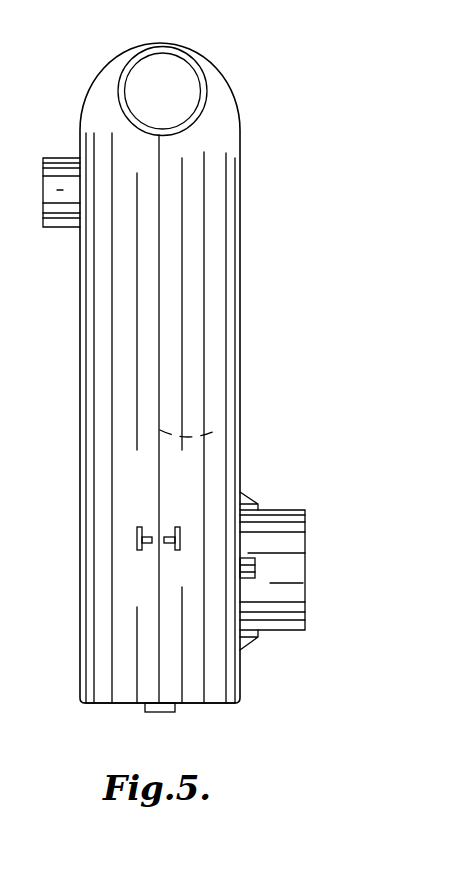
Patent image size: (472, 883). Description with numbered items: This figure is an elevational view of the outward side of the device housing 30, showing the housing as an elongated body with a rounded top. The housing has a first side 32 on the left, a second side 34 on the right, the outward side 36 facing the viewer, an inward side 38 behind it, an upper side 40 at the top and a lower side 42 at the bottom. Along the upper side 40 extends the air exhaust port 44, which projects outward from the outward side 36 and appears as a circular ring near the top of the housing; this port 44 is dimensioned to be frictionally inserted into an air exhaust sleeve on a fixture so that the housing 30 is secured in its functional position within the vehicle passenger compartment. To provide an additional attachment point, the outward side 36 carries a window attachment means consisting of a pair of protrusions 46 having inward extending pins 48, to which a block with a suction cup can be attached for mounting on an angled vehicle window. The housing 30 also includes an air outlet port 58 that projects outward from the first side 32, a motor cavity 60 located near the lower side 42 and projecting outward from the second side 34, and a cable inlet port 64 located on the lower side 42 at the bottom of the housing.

The device housing 30 is at (240, 288).
The first side 32 is at (80, 470).
The second side 34 is at (238, 361).
The outward side 36 is at (190, 215).
The inward side 38 is at (224, 429).
The upper side 40 is at (165, 47).
The lower side 42 is at (203, 705).
The air exhaust port 44 is at (200, 118).
The protrusions 46 is at (137, 538).
The pins 48 is at (147, 545).
The air outlet port 58 is at (57, 218).
The motor cavity 60 is at (292, 595).
The cable inlet port 64 is at (145, 709).